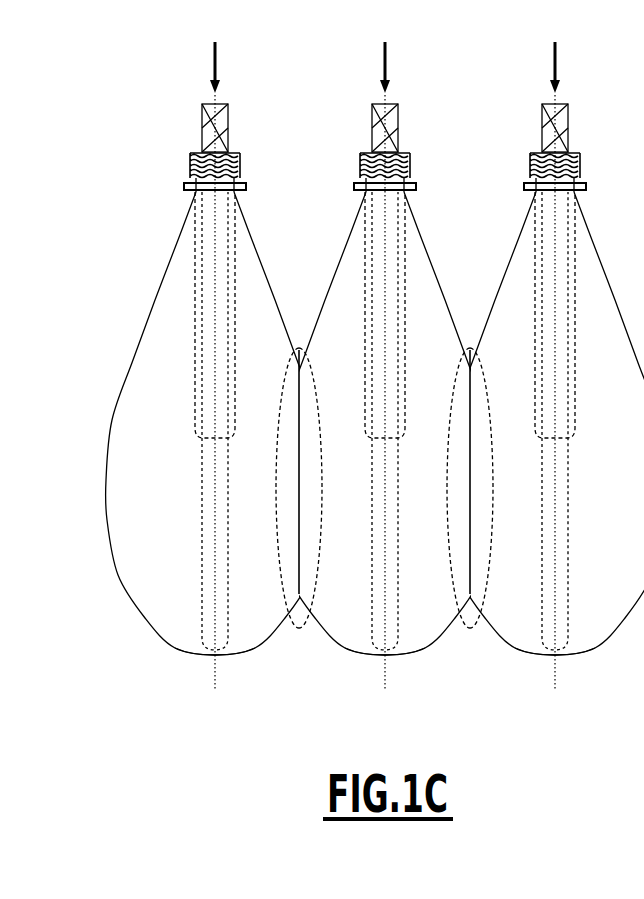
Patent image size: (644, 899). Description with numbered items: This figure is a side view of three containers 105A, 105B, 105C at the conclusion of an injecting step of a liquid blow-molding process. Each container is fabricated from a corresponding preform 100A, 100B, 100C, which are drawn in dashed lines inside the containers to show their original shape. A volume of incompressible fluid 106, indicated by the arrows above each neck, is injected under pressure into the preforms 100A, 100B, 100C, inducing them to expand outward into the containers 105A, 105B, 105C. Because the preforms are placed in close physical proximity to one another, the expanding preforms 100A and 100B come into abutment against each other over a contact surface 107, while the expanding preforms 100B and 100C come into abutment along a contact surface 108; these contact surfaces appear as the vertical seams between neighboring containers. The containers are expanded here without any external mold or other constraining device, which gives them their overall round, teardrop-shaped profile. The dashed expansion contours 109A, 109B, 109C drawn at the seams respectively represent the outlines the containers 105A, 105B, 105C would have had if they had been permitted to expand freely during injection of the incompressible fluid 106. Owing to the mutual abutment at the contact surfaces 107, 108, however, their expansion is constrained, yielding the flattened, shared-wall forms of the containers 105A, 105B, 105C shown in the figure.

The preform 100A is at (190, 245).
The preform 100B is at (360, 235).
The preform 100C is at (529, 235).
The container 105A is at (181, 673).
The container 105B is at (358, 675).
The container 105C is at (585, 662).
The incompressible fluid 106 is at (210, 60).
The contact surface 107 is at (293, 296).
The contact surface 108 is at (463, 296).
The expansion contour 109A is at (295, 640).
The expansion contour 109B is at (279, 649).
The expansion contour 109C is at (456, 655).